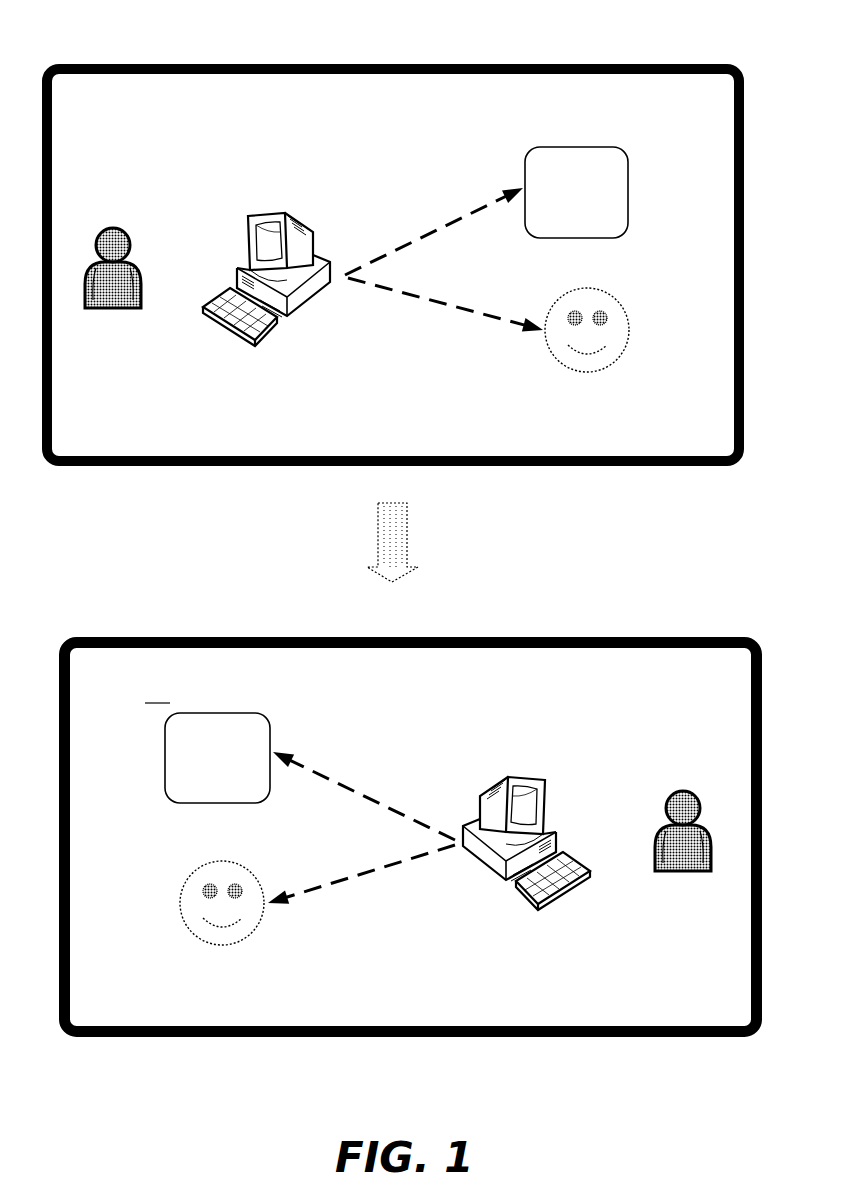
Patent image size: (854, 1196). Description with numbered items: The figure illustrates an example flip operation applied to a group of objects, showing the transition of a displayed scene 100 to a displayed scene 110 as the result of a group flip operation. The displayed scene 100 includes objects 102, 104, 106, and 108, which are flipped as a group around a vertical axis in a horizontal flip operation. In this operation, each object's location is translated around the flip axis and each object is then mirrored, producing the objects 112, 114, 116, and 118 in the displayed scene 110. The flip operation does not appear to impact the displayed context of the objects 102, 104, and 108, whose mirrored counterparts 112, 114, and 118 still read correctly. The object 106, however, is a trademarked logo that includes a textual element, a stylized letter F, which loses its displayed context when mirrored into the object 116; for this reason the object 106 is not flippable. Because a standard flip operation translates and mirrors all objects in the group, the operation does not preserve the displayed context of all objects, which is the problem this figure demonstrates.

The displayed scene 100 is at (137, 55).
The object 102 is at (112, 207).
The object 104 is at (282, 188).
The object 106 is at (588, 132).
The object 108 is at (610, 283).
The displayed scene 110 is at (137, 618).
The object 112 is at (685, 770).
The object 114 is at (515, 752).
The object 116 is at (208, 693).
The object 118 is at (200, 863).